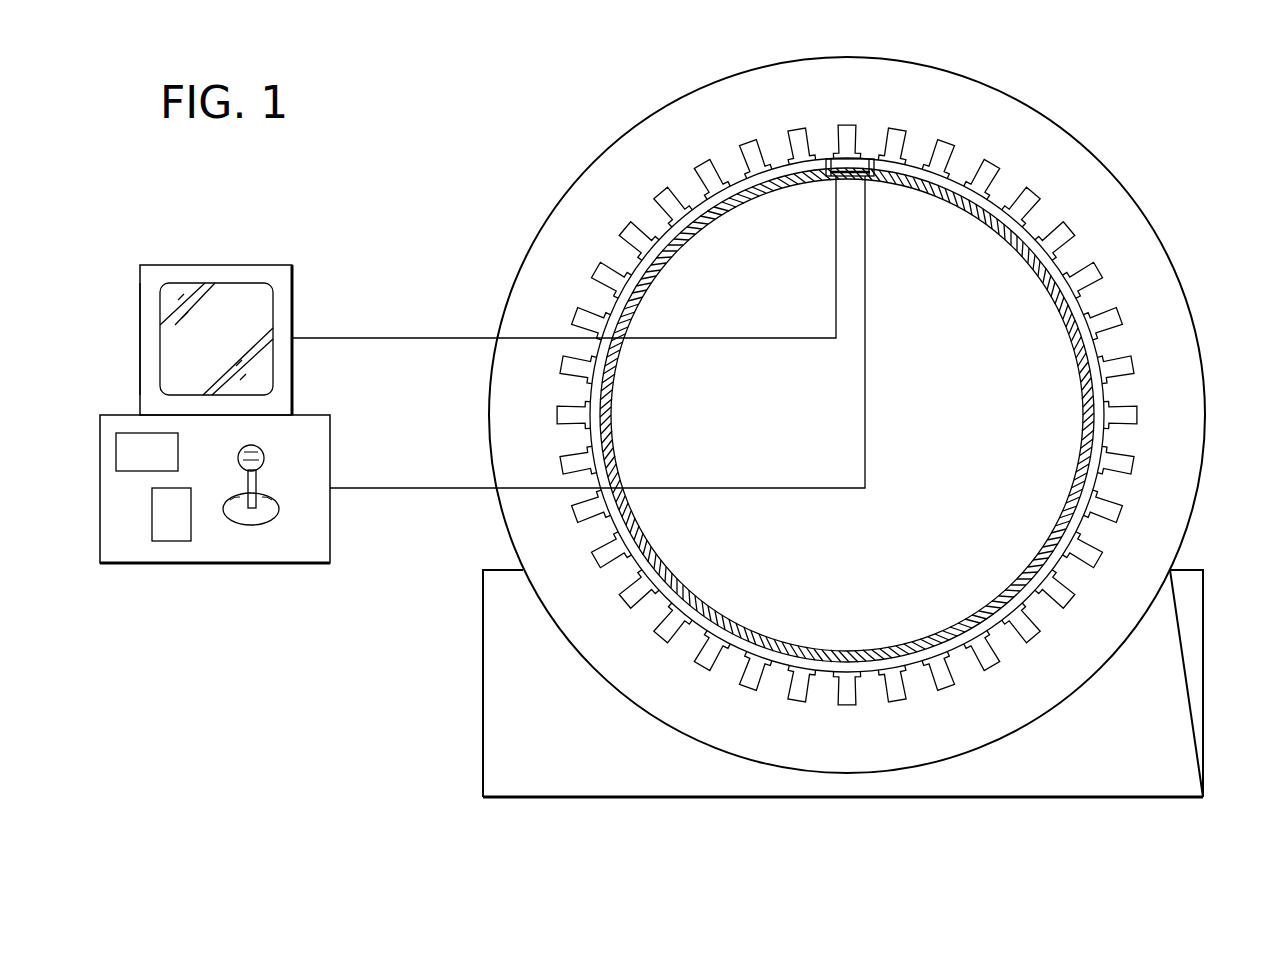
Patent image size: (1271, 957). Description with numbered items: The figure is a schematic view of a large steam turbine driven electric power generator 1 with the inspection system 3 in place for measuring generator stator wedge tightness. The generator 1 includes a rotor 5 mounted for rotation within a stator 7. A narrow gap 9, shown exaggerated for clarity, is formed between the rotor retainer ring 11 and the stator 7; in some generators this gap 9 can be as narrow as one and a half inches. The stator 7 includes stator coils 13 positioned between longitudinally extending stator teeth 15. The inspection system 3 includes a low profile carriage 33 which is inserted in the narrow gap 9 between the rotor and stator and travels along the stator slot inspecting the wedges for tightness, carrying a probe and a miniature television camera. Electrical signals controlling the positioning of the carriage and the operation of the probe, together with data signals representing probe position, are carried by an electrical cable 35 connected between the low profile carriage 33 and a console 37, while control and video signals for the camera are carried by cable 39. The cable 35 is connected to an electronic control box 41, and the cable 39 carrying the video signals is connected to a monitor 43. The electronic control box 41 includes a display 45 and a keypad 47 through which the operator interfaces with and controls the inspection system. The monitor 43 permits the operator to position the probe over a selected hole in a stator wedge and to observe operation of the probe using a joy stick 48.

The electric power generator 1 is at (478, 672).
The inspection system 3 is at (300, 275).
The rotor 5 is at (1065, 468).
The stator 7 is at (1060, 150).
The narrow gap 9 is at (1105, 390).
The rotor retainer ring 11 is at (1085, 318).
The stator coils 13 is at (700, 168).
The stator teeth 15 is at (738, 172).
The low profile carriage 33 is at (820, 172).
The electrical cable 35 is at (828, 490).
The console 37 is at (176, 251).
The cable 39 is at (798, 340).
The electronic control box 41 is at (125, 535).
The monitor 43 is at (147, 341).
The display 45 is at (128, 455).
The keypad 47 is at (175, 528).
The joy stick 48 is at (262, 455).